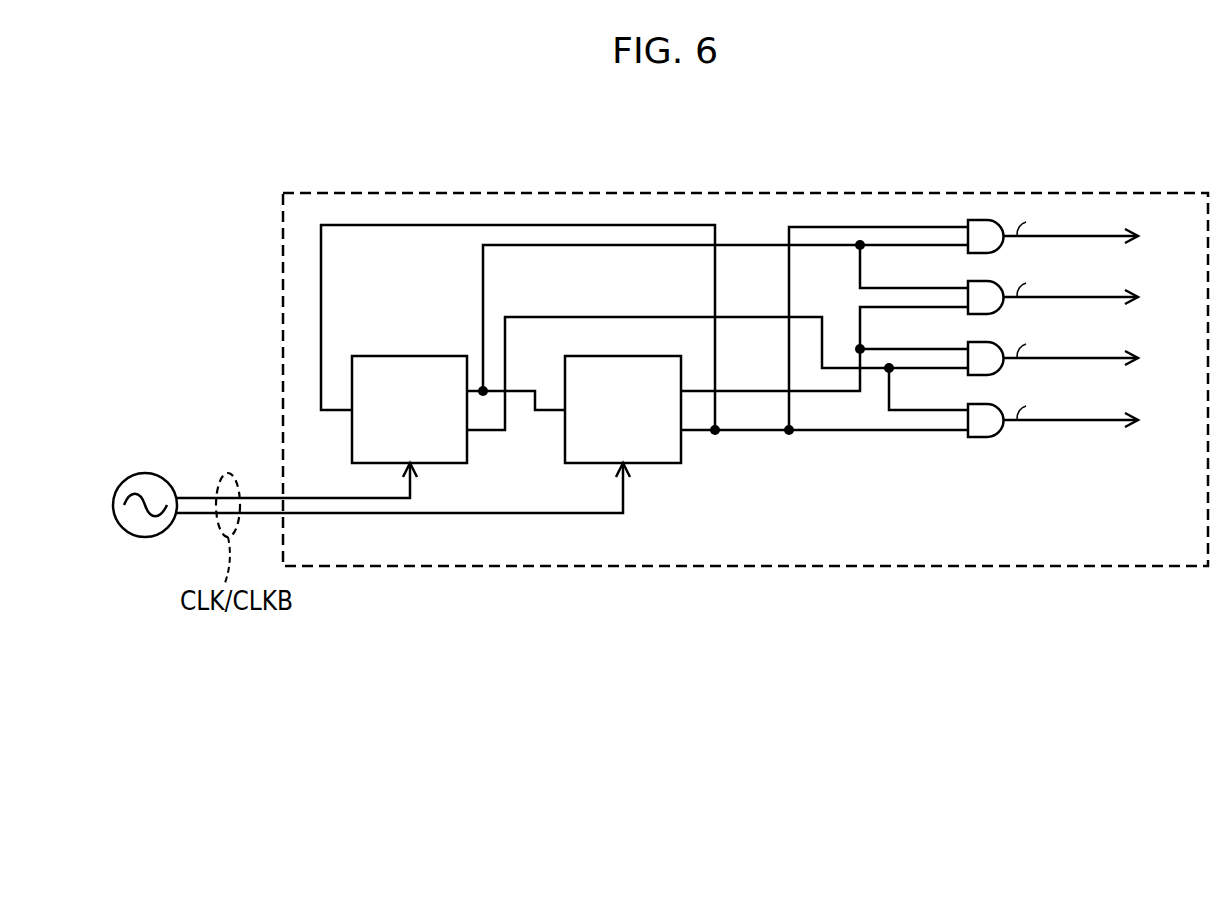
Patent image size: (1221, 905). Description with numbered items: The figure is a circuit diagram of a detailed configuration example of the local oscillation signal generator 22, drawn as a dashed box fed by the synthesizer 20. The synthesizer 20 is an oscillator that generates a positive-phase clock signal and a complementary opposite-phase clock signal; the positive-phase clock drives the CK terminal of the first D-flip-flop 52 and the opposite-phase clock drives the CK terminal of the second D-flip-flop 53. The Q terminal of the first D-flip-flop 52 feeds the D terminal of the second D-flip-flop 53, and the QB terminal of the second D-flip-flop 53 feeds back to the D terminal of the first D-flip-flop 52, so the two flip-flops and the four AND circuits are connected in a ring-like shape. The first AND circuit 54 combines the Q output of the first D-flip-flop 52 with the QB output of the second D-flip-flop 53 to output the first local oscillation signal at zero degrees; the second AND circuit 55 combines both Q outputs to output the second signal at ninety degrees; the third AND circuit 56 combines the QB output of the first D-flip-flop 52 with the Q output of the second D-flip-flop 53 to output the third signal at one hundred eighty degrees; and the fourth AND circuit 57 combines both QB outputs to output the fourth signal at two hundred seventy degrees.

The synthesizer 20 is at (145, 473).
The LO signal generator 22 is at (1082, 568).
The first D-flip-flop 52 is at (468, 452).
The second D-flip-flop 53 is at (682, 452).
The first AND circuit 54 is at (983, 254).
The second AND circuit 55 is at (983, 315).
The third AND circuit 56 is at (983, 376).
The fourth AND circuit 57 is at (983, 438).